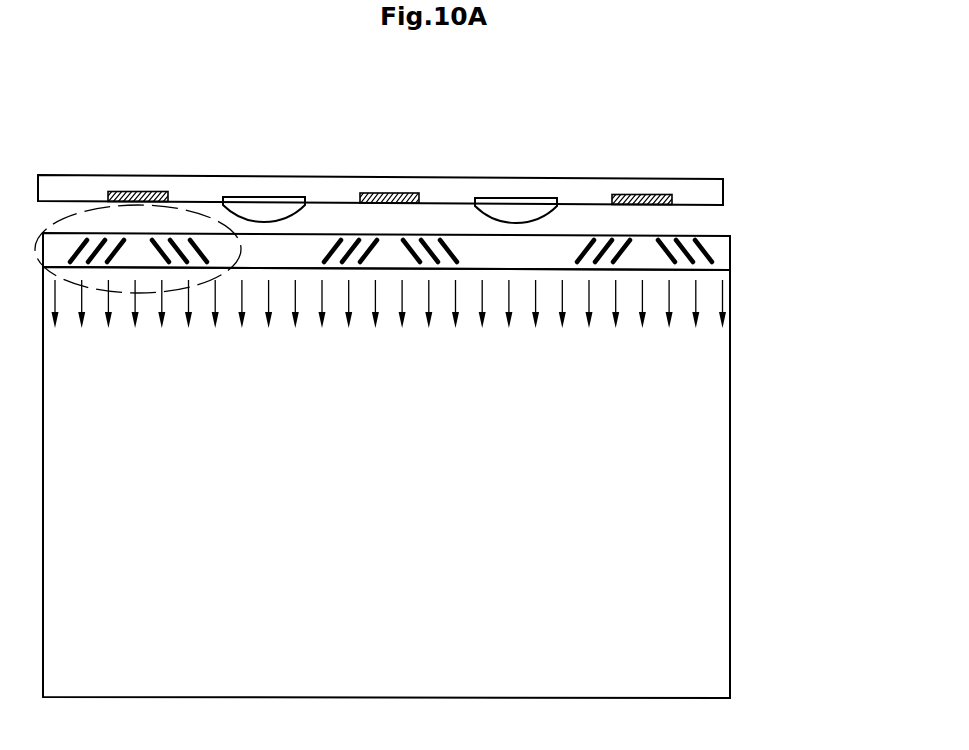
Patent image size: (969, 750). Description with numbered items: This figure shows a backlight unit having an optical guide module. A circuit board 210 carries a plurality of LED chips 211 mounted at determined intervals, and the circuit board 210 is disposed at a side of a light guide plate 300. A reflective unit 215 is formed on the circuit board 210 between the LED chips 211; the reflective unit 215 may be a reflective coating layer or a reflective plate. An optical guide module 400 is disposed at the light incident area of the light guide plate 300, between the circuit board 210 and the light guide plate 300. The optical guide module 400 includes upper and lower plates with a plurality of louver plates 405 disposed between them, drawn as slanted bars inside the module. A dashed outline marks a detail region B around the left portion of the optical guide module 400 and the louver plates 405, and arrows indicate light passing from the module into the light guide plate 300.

The circuit board 210 is at (293, 185).
The LED chips 211 is at (402, 193).
The reflective unit 215 is at (527, 197).
The optical guide module 400 is at (752, 244).
The louver plates 405 is at (702, 247).
The light guide plate 300 is at (725, 349).
The detail region B is at (128, 249).